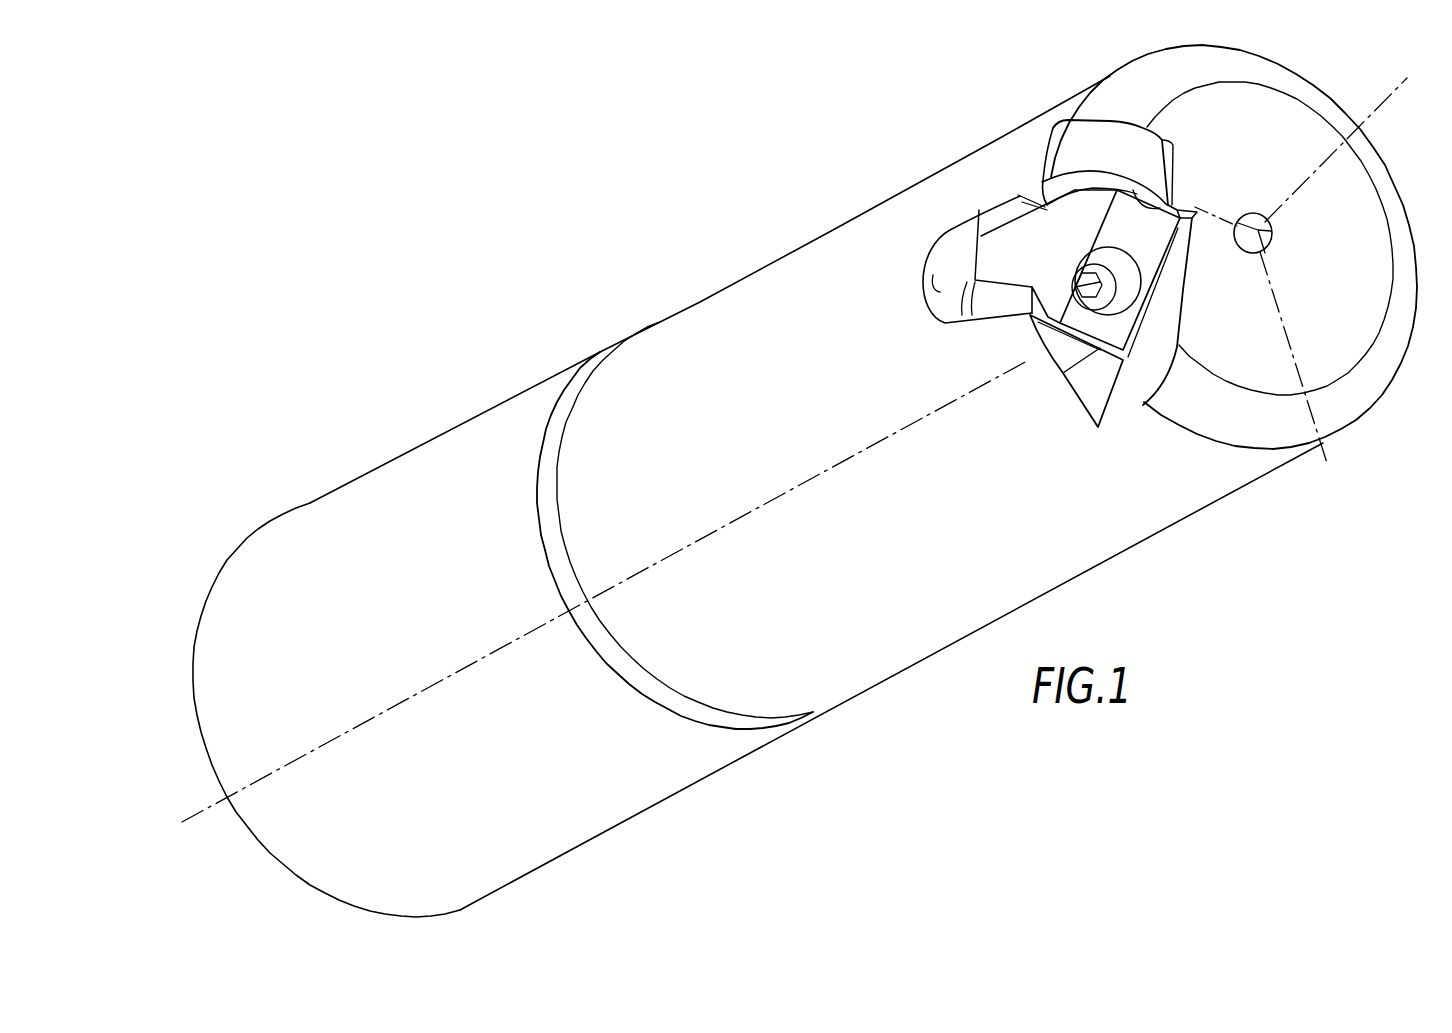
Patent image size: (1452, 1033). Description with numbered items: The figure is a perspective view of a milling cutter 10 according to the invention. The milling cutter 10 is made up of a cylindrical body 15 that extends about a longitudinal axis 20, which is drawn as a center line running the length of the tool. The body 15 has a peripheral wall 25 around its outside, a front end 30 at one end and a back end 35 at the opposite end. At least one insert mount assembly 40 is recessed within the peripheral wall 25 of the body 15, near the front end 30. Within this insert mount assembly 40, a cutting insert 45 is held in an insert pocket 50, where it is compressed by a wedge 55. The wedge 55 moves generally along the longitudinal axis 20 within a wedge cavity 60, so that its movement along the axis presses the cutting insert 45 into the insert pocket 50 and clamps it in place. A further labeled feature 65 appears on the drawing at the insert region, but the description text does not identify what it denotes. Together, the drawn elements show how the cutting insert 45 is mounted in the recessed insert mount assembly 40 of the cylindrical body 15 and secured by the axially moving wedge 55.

The milling cutter 10 is at (655, 180).
The cylindrical body 15 is at (708, 307).
The longitudinal axis 20 is at (188, 815).
The peripheral wall 25 is at (758, 290).
The front end 30 is at (1360, 205).
The back end 35 is at (193, 680).
The insert mount assembly 40 is at (900, 194).
The cutting insert 45 is at (1063, 147).
The insert pocket 50 is at (1173, 143).
The wedge 55 is at (1000, 248).
The wedge cavity 60 is at (918, 296).
The cutting edge 65 is at (1175, 200).